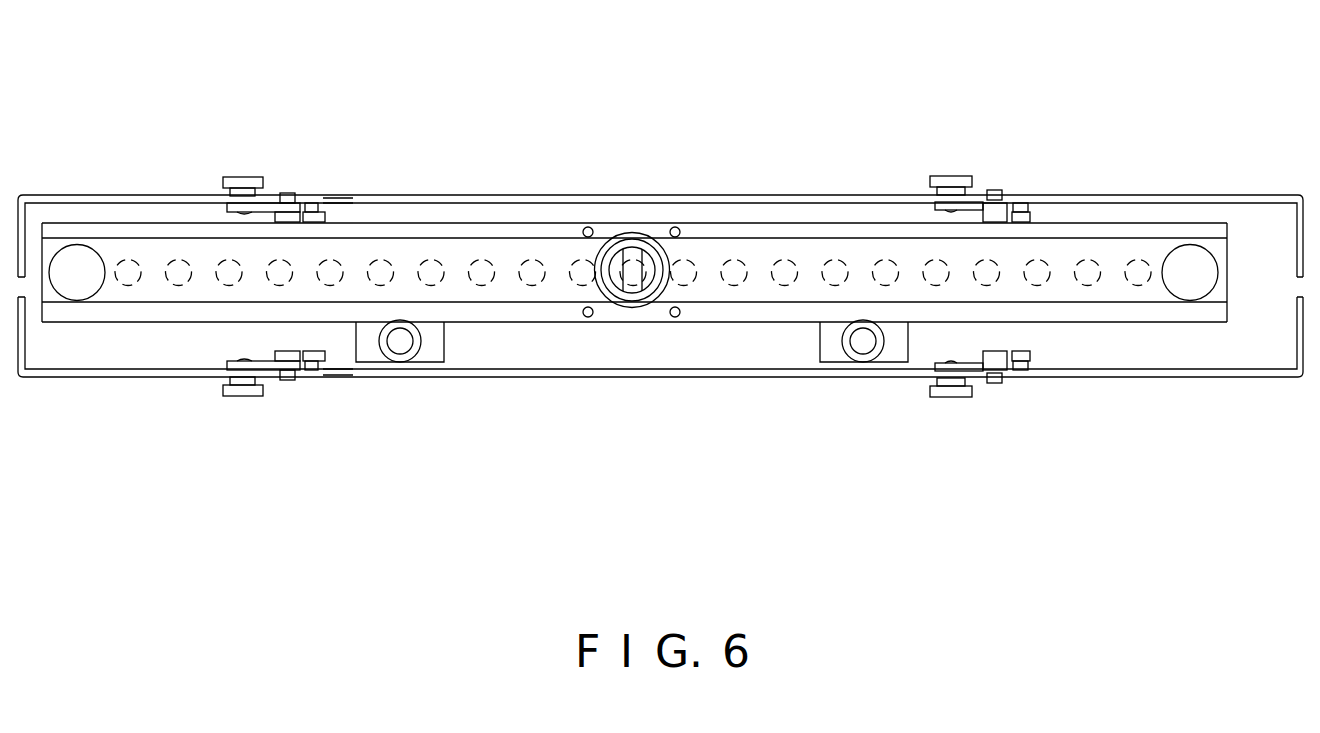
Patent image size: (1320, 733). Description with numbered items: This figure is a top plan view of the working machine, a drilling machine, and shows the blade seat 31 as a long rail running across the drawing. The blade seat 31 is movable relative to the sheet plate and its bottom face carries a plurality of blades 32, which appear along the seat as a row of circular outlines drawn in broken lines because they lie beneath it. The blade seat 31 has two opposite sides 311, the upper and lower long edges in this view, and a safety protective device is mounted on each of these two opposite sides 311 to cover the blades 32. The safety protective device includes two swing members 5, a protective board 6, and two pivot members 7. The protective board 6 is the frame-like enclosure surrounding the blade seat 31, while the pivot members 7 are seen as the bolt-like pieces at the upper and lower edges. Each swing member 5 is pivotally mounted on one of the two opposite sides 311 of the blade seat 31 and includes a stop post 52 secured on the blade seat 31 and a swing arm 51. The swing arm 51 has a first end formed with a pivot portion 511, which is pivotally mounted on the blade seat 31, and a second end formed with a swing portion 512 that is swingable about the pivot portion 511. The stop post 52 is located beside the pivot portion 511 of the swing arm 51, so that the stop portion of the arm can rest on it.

The swing member 5 is at (1006, 177).
The protective board 6 is at (608, 182).
The pivot member 7 is at (234, 164).
The blade seat 31 is at (634, 280).
The blades 32 is at (470, 258).
The opposite sides 311 is at (808, 223).
The swing arm 51 is at (236, 288).
The stop post 52 is at (324, 206).
The pivot portion 511 is at (287, 193).
The swing portion 512 is at (230, 206).